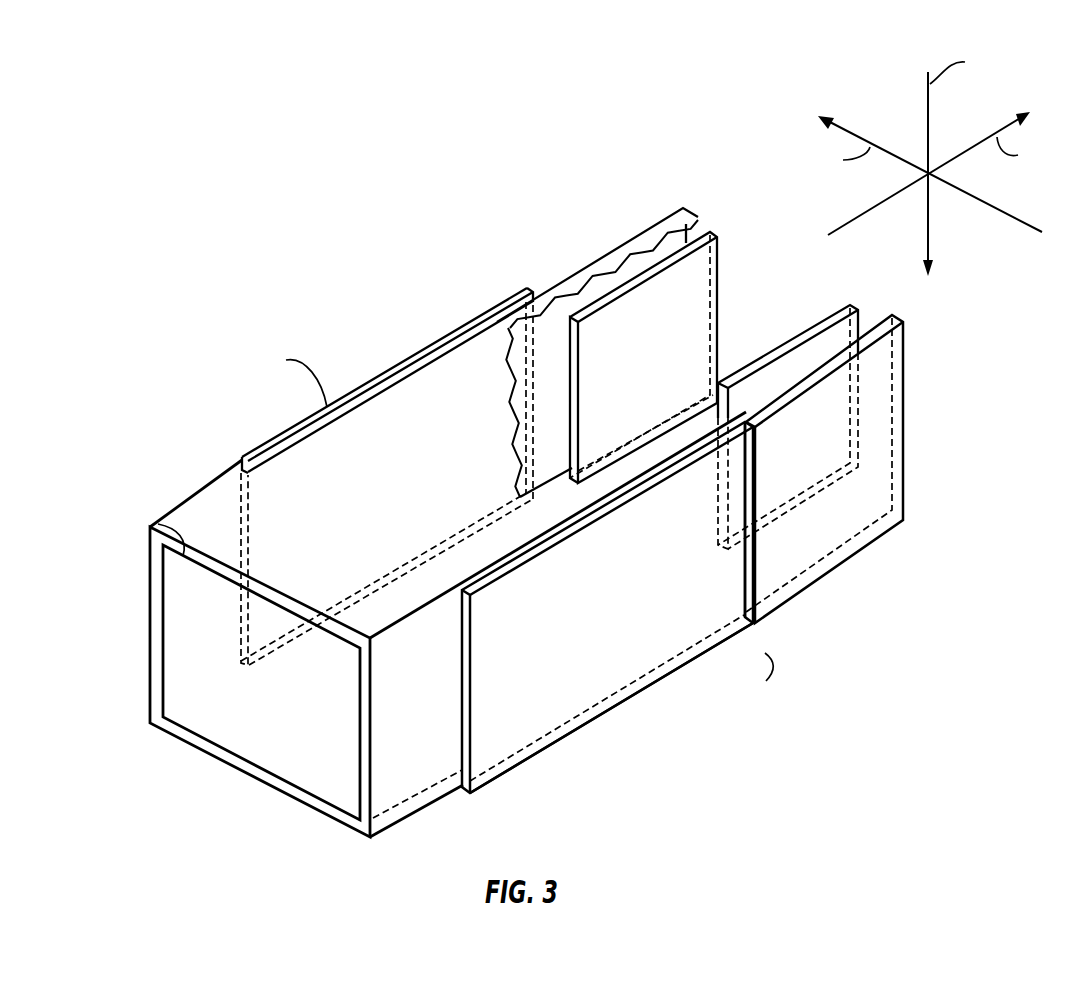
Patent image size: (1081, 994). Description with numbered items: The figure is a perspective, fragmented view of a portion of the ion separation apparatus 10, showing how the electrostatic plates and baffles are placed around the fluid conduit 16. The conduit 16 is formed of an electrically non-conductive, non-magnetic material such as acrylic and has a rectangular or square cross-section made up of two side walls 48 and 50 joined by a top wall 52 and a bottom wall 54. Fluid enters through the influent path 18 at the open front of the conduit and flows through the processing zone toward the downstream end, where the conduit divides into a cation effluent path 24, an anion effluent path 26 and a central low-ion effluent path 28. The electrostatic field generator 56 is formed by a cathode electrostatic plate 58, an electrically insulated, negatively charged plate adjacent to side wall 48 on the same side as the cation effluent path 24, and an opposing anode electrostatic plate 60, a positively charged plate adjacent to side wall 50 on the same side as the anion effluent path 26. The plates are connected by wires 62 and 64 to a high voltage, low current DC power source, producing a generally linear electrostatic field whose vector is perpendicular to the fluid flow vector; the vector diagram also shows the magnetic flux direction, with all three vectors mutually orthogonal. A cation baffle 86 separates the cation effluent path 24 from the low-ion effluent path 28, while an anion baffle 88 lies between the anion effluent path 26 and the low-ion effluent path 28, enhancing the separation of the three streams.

The ion separation apparatus 10 is at (663, 107).
The fluid conduit 16 is at (223, 493).
The influent path 18 is at (183, 645).
The cation effluent path 24 is at (692, 224).
The anion effluent path 26 is at (815, 517).
The low-ion effluent path 28 is at (762, 267).
The side wall 48 is at (163, 580).
The side wall 50 is at (365, 704).
The top wall 52 is at (157, 523).
The bottom wall 54 is at (197, 743).
The electrostatic field generator 56 is at (564, 747).
The cathode electrostatic plate 58 is at (423, 350).
The anode electrostatic plate 60 is at (670, 650).
The wire 62 is at (286, 360).
The wire 64 is at (737, 634).
The cation baffle 86 is at (630, 278).
The anion baffle 88 is at (858, 405).